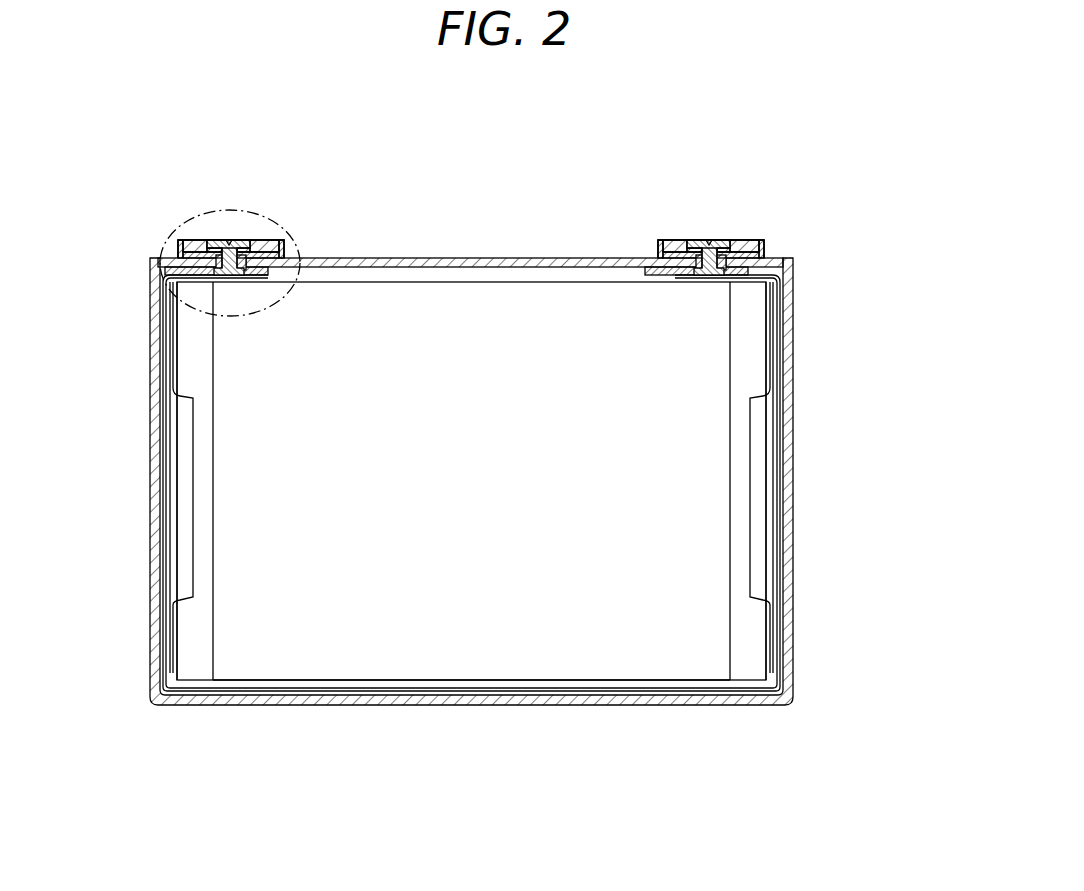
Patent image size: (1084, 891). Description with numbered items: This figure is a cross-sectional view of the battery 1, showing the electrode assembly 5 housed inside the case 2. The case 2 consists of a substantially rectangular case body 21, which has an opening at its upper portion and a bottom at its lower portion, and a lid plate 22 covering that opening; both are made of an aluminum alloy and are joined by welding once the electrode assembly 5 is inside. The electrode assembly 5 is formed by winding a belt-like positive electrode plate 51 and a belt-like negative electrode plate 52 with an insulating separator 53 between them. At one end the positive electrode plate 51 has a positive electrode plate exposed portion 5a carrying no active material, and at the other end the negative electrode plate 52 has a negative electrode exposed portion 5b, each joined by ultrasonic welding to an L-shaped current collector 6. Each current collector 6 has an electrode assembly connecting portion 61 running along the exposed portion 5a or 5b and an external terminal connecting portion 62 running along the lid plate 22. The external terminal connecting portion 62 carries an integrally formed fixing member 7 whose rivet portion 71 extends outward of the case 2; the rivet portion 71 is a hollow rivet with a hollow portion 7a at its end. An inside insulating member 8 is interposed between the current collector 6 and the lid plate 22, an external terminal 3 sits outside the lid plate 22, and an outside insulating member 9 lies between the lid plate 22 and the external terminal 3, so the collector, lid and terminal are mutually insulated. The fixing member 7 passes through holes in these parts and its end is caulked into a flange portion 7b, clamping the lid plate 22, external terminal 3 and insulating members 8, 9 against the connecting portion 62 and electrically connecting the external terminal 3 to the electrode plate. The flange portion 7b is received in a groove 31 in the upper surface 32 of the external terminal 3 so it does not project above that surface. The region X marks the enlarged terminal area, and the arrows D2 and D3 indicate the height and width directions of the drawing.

The battery 1 is at (464, 225).
The case 2 is at (528, 470).
The case body 21 is at (788, 330).
The lid plate 22 is at (768, 240).
The external terminal 3 is at (458, 193).
The groove 31 is at (213, 240).
The upper surface 32 is at (192, 240).
The electrode assembly 5 is at (507, 684).
The positive electrode plate exposed portion 5a is at (185, 522).
The positive electrode plate 51 is at (195, 668).
The negative electrode exposed portion 5b is at (773, 522).
The negative electrode plate 52 is at (747, 668).
The separator 53 is at (407, 670).
The current collector 6 is at (168, 376).
The electrode assembly connecting portion 61 is at (185, 487).
The external terminal connecting portion 62 is at (250, 277).
The fixing member 7 is at (270, 165).
The rivet portion 71 is at (478, 202).
The hollow portion 7a is at (232, 248).
The flange portion 7b is at (221, 240).
The inside insulating member 8 is at (257, 275).
The outside insulating member 9 is at (287, 248).
The enlarged region X is at (274, 217).
The height direction D2 is at (853, 580).
The width direction D3 is at (694, 758).